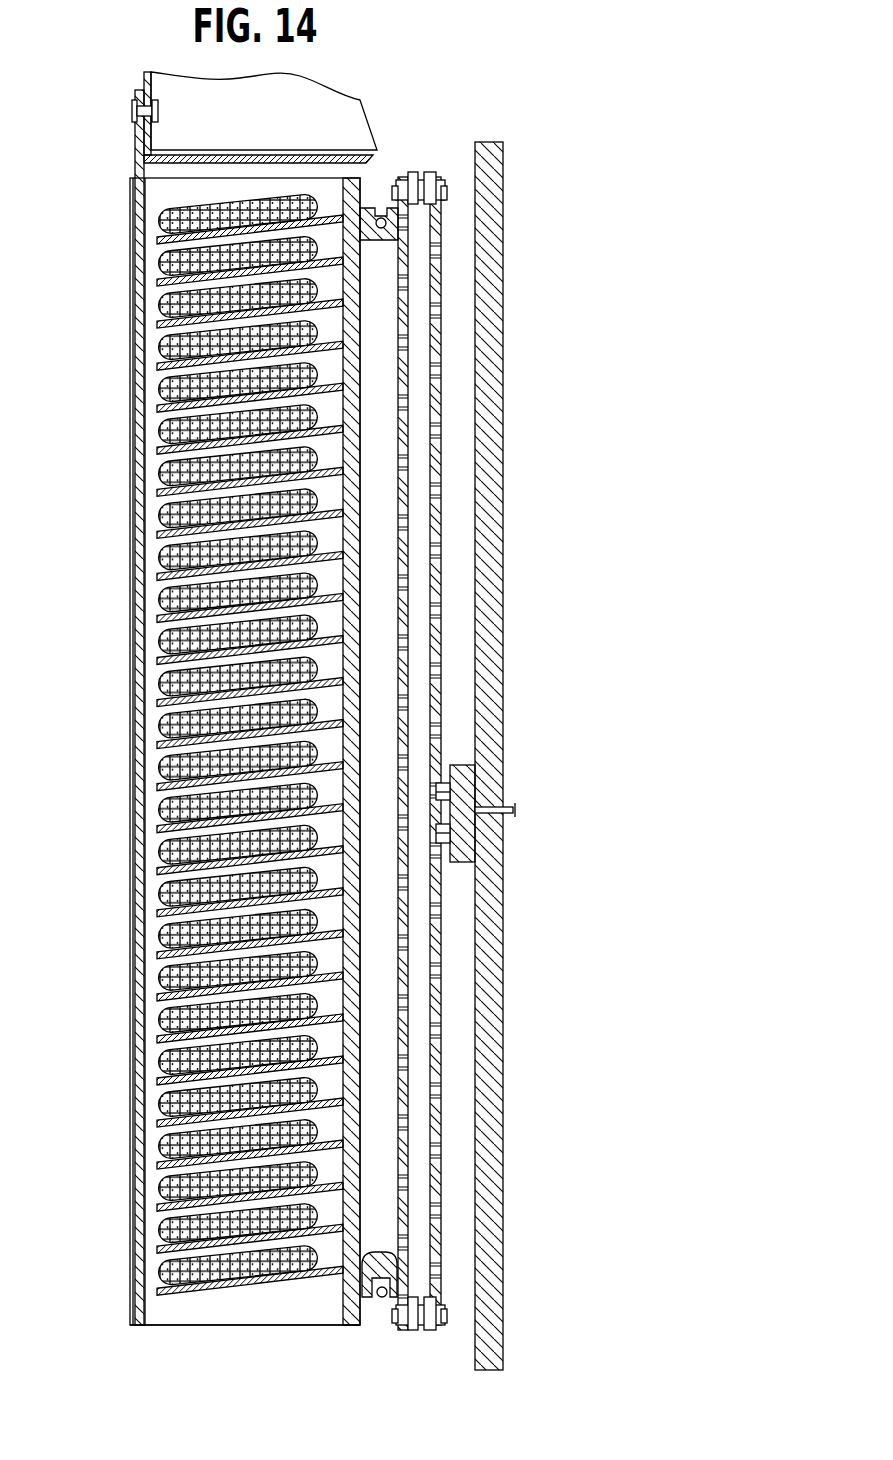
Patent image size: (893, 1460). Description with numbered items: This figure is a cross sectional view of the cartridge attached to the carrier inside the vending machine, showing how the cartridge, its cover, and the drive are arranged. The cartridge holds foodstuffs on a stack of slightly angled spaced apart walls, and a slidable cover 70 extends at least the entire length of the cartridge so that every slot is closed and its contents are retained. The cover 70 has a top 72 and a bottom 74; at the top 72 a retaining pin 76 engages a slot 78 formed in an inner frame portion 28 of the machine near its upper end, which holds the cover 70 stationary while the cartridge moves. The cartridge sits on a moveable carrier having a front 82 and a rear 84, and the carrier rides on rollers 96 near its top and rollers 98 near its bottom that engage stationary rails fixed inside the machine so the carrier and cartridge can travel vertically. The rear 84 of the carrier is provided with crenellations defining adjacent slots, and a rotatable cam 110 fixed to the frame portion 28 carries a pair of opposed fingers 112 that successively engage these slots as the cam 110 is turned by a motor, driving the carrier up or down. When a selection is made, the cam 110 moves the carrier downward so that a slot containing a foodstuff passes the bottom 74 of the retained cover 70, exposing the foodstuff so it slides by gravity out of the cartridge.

The inner frame portion 28 is at (290, 150).
The cover 70 is at (133, 743).
The top of the cover 72 is at (132, 167).
The bottom of the cover 74 is at (130, 1298).
The retaining pin 76 is at (130, 106).
The slot 78 is at (157, 92).
The front of the carrier 82 is at (397, 902).
The rear of the carrier 84 is at (437, 962).
The rollers near the top of the carrier 96 is at (420, 173).
The rollers near the bottom of the carrier 98 is at (414, 1336).
The rotatable cam 110 is at (465, 835).
The fingers 112 is at (440, 785).